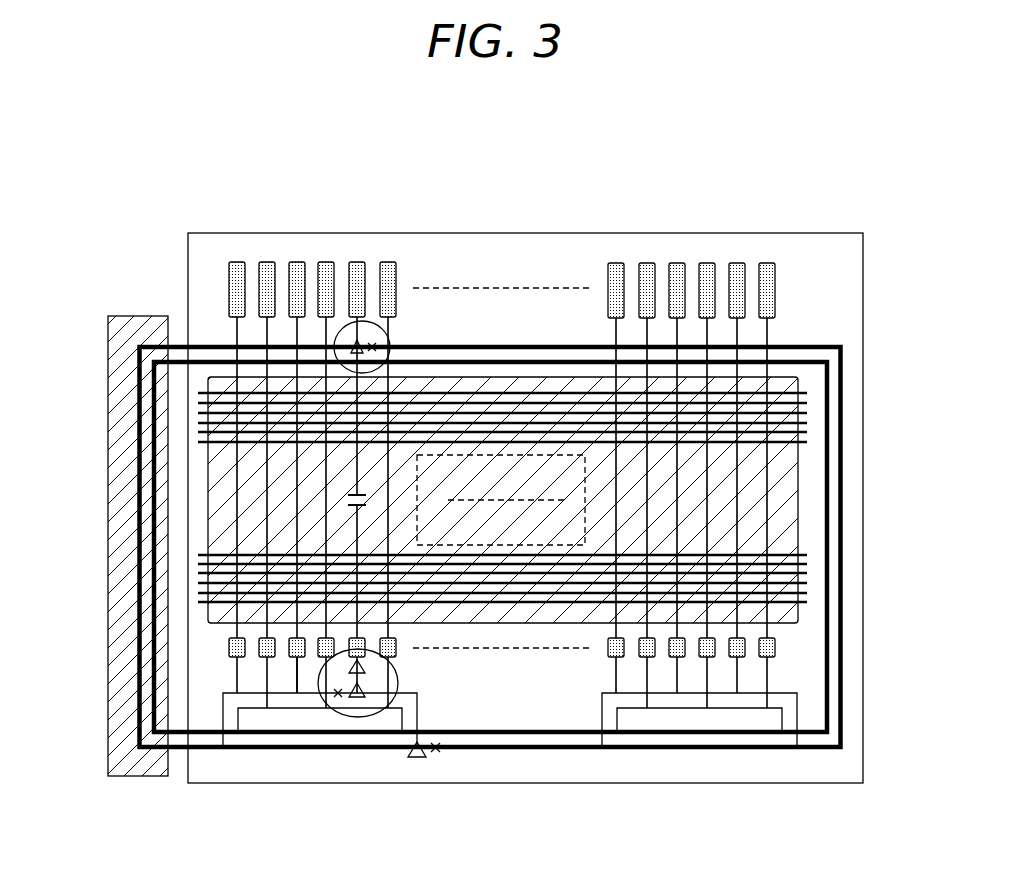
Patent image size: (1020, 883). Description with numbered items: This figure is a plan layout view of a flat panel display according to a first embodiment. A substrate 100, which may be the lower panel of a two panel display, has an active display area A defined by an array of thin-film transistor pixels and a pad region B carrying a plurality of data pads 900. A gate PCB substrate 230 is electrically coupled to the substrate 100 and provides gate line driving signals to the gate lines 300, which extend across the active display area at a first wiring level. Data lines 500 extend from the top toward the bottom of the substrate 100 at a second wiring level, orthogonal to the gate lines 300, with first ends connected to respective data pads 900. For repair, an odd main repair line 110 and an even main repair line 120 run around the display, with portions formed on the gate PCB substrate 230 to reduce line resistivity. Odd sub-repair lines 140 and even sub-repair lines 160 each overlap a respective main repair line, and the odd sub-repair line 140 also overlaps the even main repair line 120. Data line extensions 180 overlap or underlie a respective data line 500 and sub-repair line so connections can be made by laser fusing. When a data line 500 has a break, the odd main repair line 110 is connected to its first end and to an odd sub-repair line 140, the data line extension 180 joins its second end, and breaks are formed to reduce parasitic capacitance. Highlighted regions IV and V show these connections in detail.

The substrate 100 is at (864, 705).
The odd main repair line 110 is at (843, 380).
The even main repair line 120 is at (828, 437).
The odd sub-repair lines 140 is at (218, 722).
The even sub-repair lines 160 is at (268, 678).
The data line extensions 180 is at (300, 678).
The gate PCB substrate 230 is at (118, 333).
The gate lines 300 is at (225, 557).
The data lines 500 is at (395, 378).
The data pads 900 is at (297, 262).
The active display area A is at (797, 502).
The pad region B is at (838, 266).
The highlighted region IV is at (382, 321).
The highlighted region V is at (398, 683).